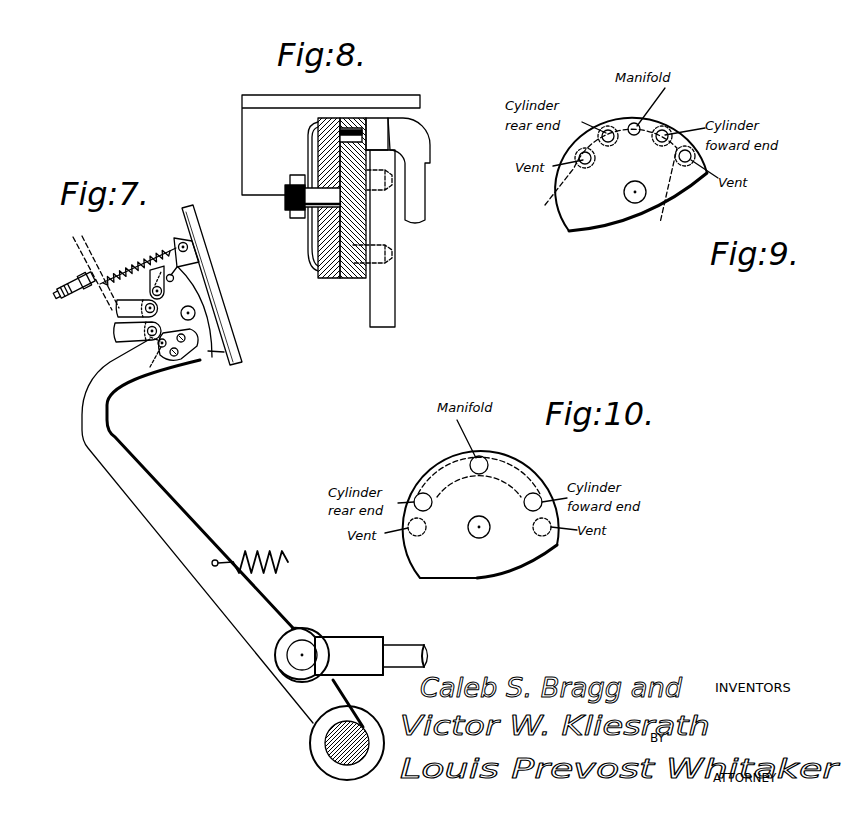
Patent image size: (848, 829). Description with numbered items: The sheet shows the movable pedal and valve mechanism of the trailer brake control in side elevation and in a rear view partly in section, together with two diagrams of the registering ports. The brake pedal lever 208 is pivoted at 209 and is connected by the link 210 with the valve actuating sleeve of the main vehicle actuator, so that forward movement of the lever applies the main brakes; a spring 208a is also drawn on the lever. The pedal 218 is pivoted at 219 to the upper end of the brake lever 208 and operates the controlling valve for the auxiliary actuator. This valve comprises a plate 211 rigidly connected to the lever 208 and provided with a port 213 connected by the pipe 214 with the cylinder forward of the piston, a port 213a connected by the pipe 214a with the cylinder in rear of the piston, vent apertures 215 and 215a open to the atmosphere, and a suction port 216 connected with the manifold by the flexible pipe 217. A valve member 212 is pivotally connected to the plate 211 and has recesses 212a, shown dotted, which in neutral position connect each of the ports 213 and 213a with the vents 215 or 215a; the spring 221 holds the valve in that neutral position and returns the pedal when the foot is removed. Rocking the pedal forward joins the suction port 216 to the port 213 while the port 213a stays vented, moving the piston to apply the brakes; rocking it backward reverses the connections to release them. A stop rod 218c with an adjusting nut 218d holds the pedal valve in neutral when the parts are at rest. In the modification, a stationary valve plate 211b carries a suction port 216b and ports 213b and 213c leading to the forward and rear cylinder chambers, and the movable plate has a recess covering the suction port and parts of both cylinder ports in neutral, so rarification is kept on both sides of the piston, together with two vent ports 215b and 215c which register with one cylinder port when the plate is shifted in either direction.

In FIG. 7, the brake pedal lever 208 is at (240, 610).
In FIG. 8, the brake pedal lever 208 is at (388, 305).
In FIG. 7, the spring 208a is at (252, 548).
In FIG. 7, the pivot 209 is at (327, 738).
In FIG. 7, the link 210 is at (398, 647).
In FIG. 7, the plate 211 is at (196, 368).
In FIG. 8, the plate 211 is at (347, 277).
In FIG. 9, the plate 211 is at (595, 225).
In FIG. 10, the stationary valve plate 211b is at (485, 570).
In FIG. 7, the valve member 212 is at (222, 358).
In FIG. 8, the valve member 212 is at (320, 260).
In FIG. 8, the recesses 212a is at (317, 137).
In FIG. 9, the recesses 212a is at (604, 184).
In FIG. 9, the port 213 is at (664, 130).
In FIG. 9, the port 213a is at (607, 130).
In FIG. 10, the port 213b is at (540, 495).
In FIG. 10, the port 213c is at (418, 496).
In FIG. 7, the pipe 214 is at (152, 274).
In FIG. 7, the pipe 214a is at (131, 343).
In FIG. 7, the vent aperture 215 is at (168, 252).
In FIG. 9, the vent aperture 215 is at (688, 162).
In FIG. 7, the vent aperture 215a is at (160, 349).
In FIG. 9, the vent aperture 215a is at (580, 156).
In FIG. 10, the vent port 215b is at (550, 536).
In FIG. 10, the vent port 215c is at (412, 537).
In FIG. 9, the suction port 216 is at (634, 123).
In FIG. 10, the suction port 216b is at (492, 448).
In FIG. 7, the flexible pipe 217 is at (118, 312).
In FIG. 8, the flexible pipe 217 is at (418, 195).
In FIG. 7, the pedal 218 is at (238, 358).
In FIG. 8, the pedal 218 is at (405, 100).
In FIG. 7, the stop rod 218c is at (168, 240).
In FIG. 7, the adjusting nut 218d is at (70, 286).
In FIG. 7, the pivot 219 is at (197, 315).
In FIG. 8, the pivot 219 is at (302, 207).
In FIG. 7, the spring 221 is at (106, 270).